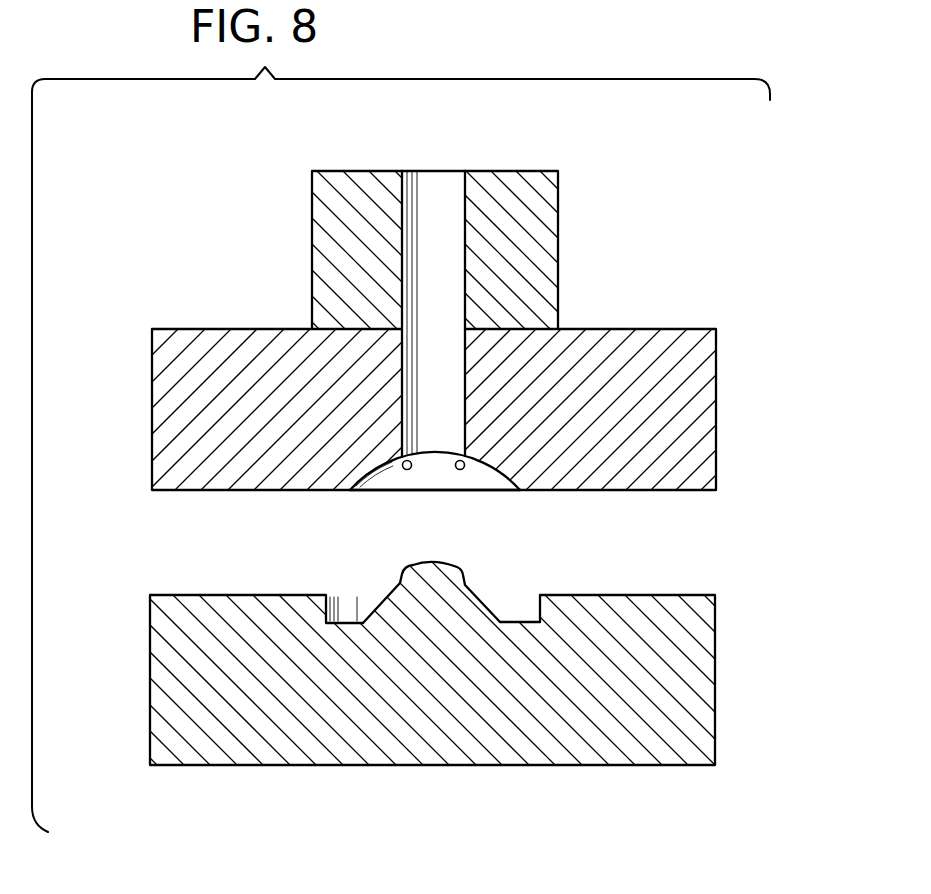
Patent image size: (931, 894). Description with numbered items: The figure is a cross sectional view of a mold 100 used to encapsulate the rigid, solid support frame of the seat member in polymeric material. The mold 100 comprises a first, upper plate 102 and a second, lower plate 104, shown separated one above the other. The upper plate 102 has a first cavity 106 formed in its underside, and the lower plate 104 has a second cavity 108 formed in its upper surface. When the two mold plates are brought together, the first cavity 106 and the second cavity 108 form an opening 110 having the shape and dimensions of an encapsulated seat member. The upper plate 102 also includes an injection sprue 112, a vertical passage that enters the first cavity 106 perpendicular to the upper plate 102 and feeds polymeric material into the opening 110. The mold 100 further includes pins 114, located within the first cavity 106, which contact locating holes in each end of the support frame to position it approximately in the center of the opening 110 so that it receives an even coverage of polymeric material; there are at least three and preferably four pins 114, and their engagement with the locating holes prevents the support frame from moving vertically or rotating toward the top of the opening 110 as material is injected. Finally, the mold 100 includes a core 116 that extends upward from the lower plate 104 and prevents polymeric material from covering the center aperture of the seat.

The mold 100 is at (752, 514).
The first, upper plate 102 is at (717, 392).
The second, lower plate 104 is at (716, 675).
The first cavity 106 is at (487, 466).
The second cavity 108 is at (523, 610).
The opening 110 is at (513, 595).
The injection sprue 112 is at (438, 177).
The pins 114 is at (455, 470).
The core 116 is at (413, 565).